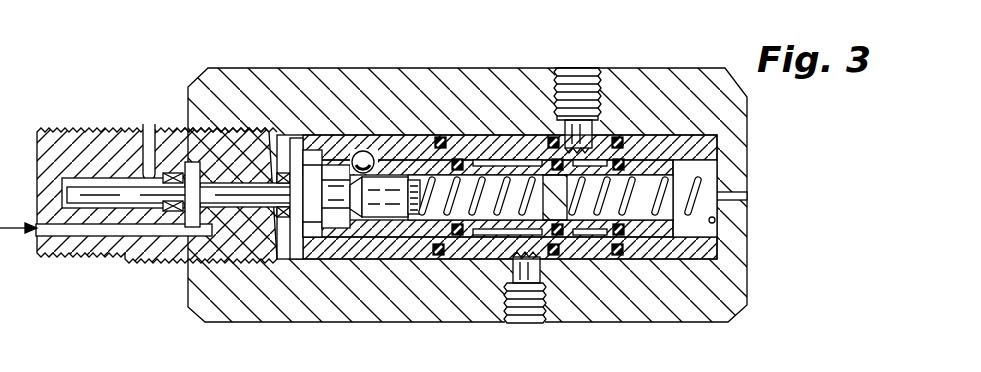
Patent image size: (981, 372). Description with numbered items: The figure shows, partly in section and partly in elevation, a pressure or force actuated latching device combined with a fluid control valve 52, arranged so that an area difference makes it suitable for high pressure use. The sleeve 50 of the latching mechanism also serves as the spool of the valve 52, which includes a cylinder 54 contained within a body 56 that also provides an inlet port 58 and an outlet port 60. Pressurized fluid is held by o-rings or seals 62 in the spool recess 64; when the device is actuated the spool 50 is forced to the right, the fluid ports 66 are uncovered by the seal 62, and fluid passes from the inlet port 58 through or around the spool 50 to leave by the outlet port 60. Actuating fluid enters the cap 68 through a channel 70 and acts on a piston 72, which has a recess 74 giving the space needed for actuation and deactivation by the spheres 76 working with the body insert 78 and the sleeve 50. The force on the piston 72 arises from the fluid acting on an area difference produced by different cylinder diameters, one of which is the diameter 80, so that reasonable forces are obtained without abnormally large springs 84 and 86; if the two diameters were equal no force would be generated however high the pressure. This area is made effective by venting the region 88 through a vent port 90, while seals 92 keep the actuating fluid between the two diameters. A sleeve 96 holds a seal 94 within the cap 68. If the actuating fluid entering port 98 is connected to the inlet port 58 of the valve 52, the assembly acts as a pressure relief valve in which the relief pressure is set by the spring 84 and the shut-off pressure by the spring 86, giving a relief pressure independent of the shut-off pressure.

The sleeve 50 is at (430, 230).
The fluid control valve 52 is at (575, 203).
The cylinder 54 is at (705, 250).
The body 56 is at (707, 292).
The inlet port 58 is at (523, 327).
The outlet port 60 is at (577, 30).
The o-rings or seals 62 is at (556, 163).
The spool recess 64 is at (487, 240).
The fluid ports 66 is at (577, 258).
The cap 68 is at (57, 130).
The channel 70 is at (90, 236).
The piston 72 is at (318, 147).
The recess 74 is at (333, 218).
The spheres 76 is at (345, 152).
The body insert 78 is at (385, 238).
The cylinder diameter 80 is at (105, 236).
The spring 84 is at (435, 142).
The spring 86 is at (689, 187).
The region 88 is at (165, 208).
The vent port 90 is at (147, 124).
The seals 92 is at (187, 172).
The seal 94 is at (280, 216).
The sleeve 96 is at (247, 172).
The port 98 is at (37, 232).